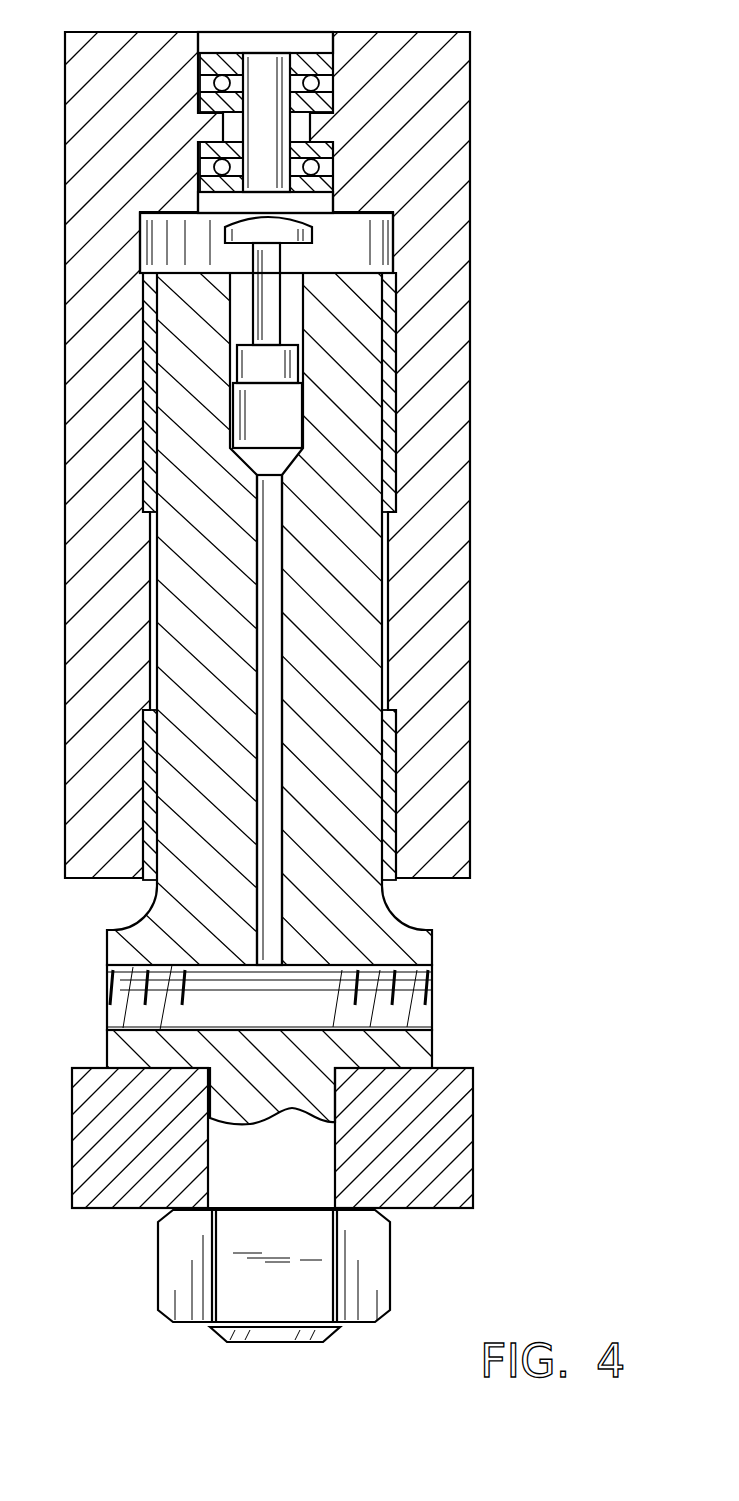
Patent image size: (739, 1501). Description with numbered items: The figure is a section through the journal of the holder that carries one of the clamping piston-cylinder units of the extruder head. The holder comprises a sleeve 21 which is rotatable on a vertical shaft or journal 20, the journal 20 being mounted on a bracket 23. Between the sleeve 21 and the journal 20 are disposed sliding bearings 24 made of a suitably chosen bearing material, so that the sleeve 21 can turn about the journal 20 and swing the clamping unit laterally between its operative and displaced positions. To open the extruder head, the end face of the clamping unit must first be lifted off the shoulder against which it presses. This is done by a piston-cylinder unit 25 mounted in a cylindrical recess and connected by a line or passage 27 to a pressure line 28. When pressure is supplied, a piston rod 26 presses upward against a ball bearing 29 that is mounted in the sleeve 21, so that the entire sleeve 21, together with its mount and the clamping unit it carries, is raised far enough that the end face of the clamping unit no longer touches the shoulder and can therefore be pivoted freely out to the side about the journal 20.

The journal 20 is at (345, 672).
The sleeve 21 is at (450, 538).
The bracket 23 is at (460, 1167).
The sliding bearings 24 is at (385, 365).
The piston-cylinder unit 25 is at (293, 427).
The piston rod 26 is at (270, 312).
The passage 27 is at (272, 878).
The pressure line 28 is at (400, 1007).
The ball bearing 29 is at (325, 185).